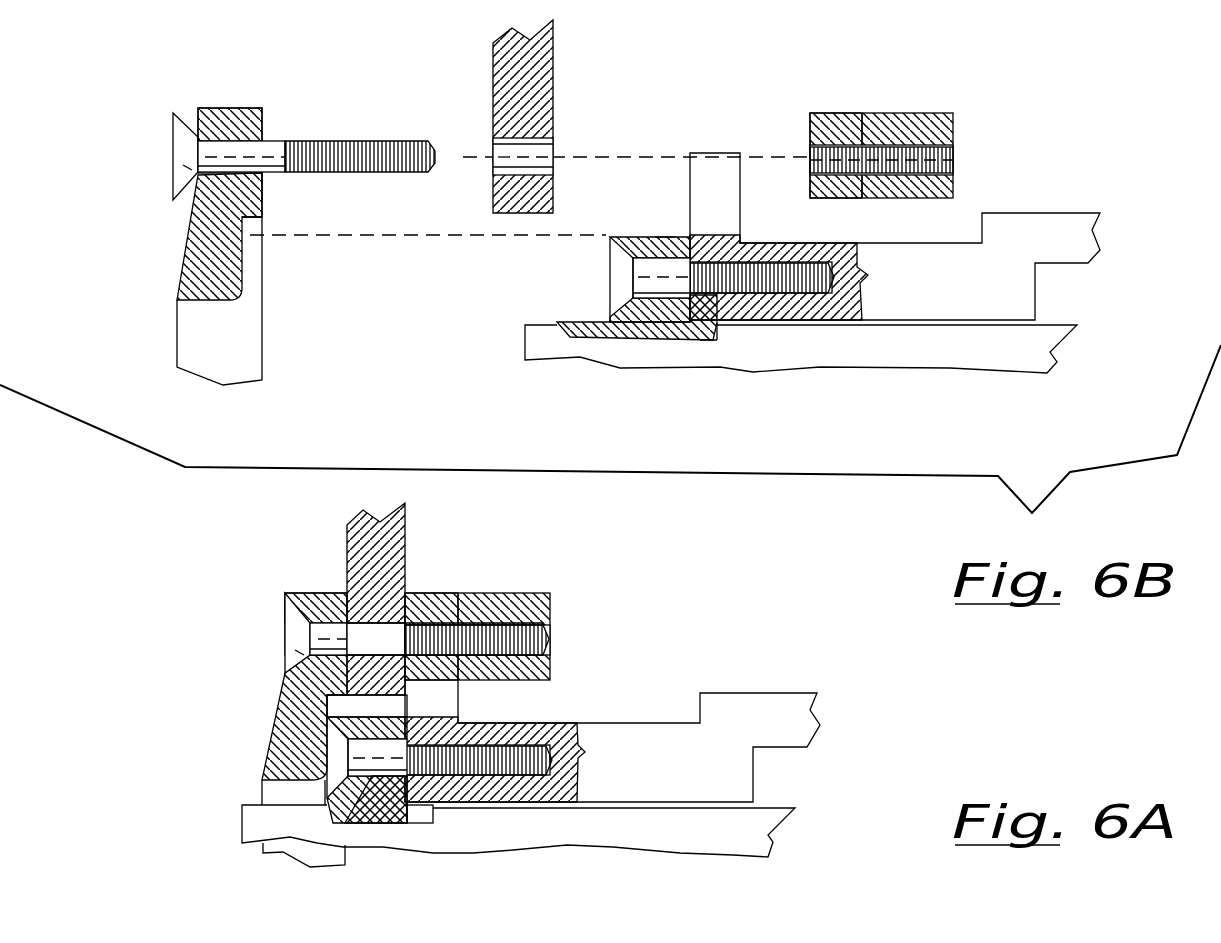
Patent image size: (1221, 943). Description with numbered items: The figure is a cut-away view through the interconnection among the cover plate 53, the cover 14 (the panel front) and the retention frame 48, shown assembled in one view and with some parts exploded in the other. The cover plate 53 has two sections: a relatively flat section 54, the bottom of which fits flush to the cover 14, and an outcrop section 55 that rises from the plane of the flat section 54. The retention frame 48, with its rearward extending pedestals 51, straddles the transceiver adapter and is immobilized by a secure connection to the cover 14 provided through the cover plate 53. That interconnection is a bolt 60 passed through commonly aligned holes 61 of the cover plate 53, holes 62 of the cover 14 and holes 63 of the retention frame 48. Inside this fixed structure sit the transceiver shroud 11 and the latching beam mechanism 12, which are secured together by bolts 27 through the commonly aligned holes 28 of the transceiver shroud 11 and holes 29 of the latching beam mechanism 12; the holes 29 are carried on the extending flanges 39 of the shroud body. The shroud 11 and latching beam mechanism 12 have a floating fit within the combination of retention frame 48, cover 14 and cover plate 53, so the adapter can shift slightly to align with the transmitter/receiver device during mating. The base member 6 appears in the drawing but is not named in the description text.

In FIG. 6A, the base plate 6 is at (242, 832).
In FIG. 6B, the base plate 6 is at (525, 348).
In FIG. 6A, the transceiver shroud 11 is at (430, 813).
In FIG. 6B, the transceiver shroud 11 is at (708, 330).
In FIG. 6A, the latching beam mechanism 12 is at (585, 723).
In FIG. 6B, the latching beam mechanism 12 is at (765, 242).
In FIG. 6A, the cover 14 is at (408, 518).
In FIG. 6B, the cover 14 is at (557, 55).
In FIG. 6A, the bolts 27 is at (335, 762).
In FIG. 6B, the bolts 27 is at (613, 272).
In FIG. 6A, the holes 28 is at (372, 783).
In FIG. 6B, the holes 28 is at (660, 302).
In FIG. 6A, the holes 29 is at (468, 777).
In FIG. 6B, the holes 29 is at (758, 297).
In FIG. 6A, the extending flanges 39 is at (407, 700).
In FIG. 6B, the extending flanges 39 is at (667, 240).
In FIG. 6A, the retention frame 48 is at (550, 595).
In FIG. 6B, the retention frame 48 is at (905, 113).
In FIG. 6A, the pedestals 51 is at (513, 593).
In FIG. 6B, the pedestals 51 is at (835, 112).
In FIG. 6A, the cover plate 53 is at (290, 590).
In FIG. 6B, the cover plate 53 is at (265, 107).
In FIG. 6A, the flat section 54 is at (333, 592).
In FIG. 6B, the flat section 54 is at (237, 108).
In FIG. 6A, the outcrop section 55 is at (262, 745).
In FIG. 6B, the outcrop section 55 is at (177, 268).
In FIG. 6A, the bolt 60 is at (298, 632).
In FIG. 6B, the bolt 60 is at (173, 147).
In FIG. 6A, the holes 61 is at (277, 703).
In FIG. 6B, the holes 61 is at (260, 200).
In FIG. 6A, the holes 62 is at (383, 632).
In FIG. 6B, the holes 62 is at (537, 152).
In FIG. 6A, the holes 63 is at (553, 640).
In FIG. 6B, the holes 63 is at (953, 160).